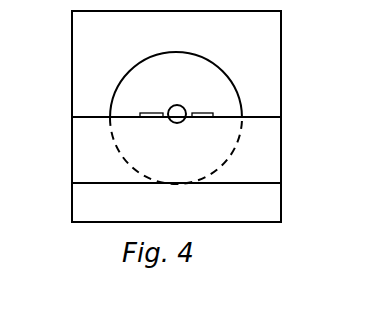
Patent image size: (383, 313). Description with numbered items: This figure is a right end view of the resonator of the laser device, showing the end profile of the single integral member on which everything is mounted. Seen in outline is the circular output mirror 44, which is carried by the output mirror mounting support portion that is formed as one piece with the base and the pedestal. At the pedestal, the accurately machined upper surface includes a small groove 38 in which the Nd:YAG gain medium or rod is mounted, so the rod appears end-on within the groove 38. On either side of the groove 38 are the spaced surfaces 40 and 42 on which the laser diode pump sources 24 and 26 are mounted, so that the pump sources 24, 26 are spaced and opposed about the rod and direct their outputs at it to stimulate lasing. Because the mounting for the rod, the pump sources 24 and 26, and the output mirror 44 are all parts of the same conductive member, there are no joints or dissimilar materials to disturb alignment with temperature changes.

The laser diode pump source 24 is at (202, 109).
The laser diode pump source 26 is at (153, 109).
The groove 38 is at (174, 121).
The surface 40 is at (228, 114).
The surface 42 is at (100, 117).
The output mirror 44 is at (196, 51).